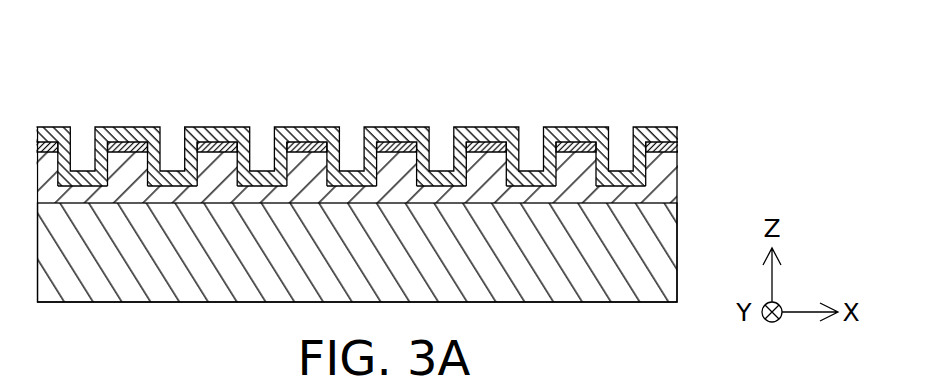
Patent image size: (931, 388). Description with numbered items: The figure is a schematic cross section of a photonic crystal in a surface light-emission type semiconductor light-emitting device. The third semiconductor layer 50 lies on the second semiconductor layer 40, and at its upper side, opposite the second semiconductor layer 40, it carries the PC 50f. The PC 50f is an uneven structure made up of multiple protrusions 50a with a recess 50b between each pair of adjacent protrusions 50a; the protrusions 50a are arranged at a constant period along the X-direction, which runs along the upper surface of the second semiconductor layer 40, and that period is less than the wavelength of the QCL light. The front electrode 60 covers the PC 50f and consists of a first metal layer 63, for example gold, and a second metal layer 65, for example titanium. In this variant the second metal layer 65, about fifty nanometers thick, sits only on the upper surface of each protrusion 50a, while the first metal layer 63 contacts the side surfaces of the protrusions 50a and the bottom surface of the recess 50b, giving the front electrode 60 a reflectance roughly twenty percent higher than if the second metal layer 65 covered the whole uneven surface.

The second semiconductor layer 40 is at (663, 253).
The third semiconductor layer 50 is at (375, 159).
The protrusion 50a is at (215, 163).
The recess 50b is at (187, 60).
The PC 50f is at (352, 101).
The front electrode 60 is at (351, 101).
The first metal layer 63 is at (485, 120).
The second metal layer 65 is at (498, 130).